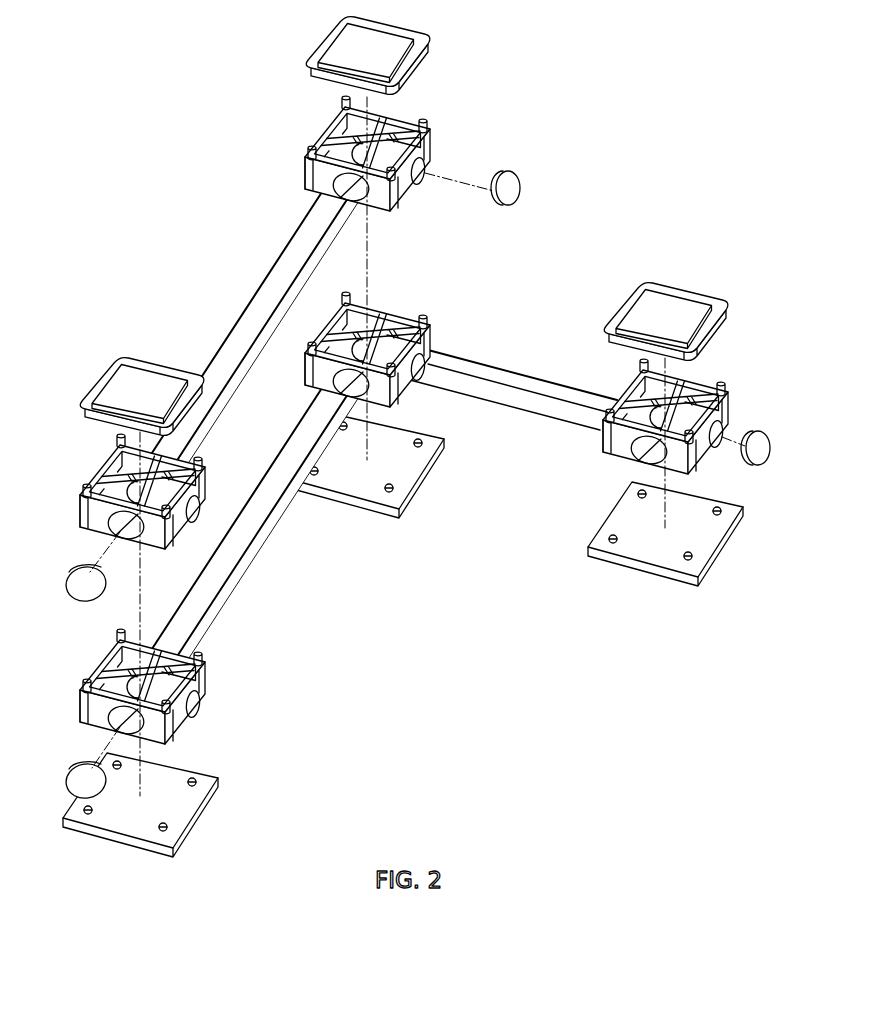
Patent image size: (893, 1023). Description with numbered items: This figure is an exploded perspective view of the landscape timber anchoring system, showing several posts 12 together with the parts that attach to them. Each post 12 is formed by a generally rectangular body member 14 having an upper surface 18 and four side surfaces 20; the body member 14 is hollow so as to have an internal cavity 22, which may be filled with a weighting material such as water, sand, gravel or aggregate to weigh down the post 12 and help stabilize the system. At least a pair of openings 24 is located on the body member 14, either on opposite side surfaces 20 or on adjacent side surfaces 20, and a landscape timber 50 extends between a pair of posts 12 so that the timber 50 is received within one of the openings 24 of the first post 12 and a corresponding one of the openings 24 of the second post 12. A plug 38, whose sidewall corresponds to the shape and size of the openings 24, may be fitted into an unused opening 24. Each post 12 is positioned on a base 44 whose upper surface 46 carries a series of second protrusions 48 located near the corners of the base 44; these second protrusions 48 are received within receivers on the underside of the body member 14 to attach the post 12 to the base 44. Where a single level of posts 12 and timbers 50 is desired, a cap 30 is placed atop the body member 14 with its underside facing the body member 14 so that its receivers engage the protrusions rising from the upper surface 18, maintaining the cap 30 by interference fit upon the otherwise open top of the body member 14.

The post 12 is at (407, 422).
The body member 14 is at (312, 178).
The upper surface 18 is at (330, 117).
The side surfaces 20 is at (309, 199).
The internal cavity 22 is at (405, 127).
The openings 24 is at (427, 183).
The cap 30 is at (437, 18).
The plug 38 is at (533, 178).
The base 44 is at (404, 649).
The upper surface 46 is at (408, 461).
The second protrusions 48 is at (441, 446).
The landscape timber 50 is at (257, 307).